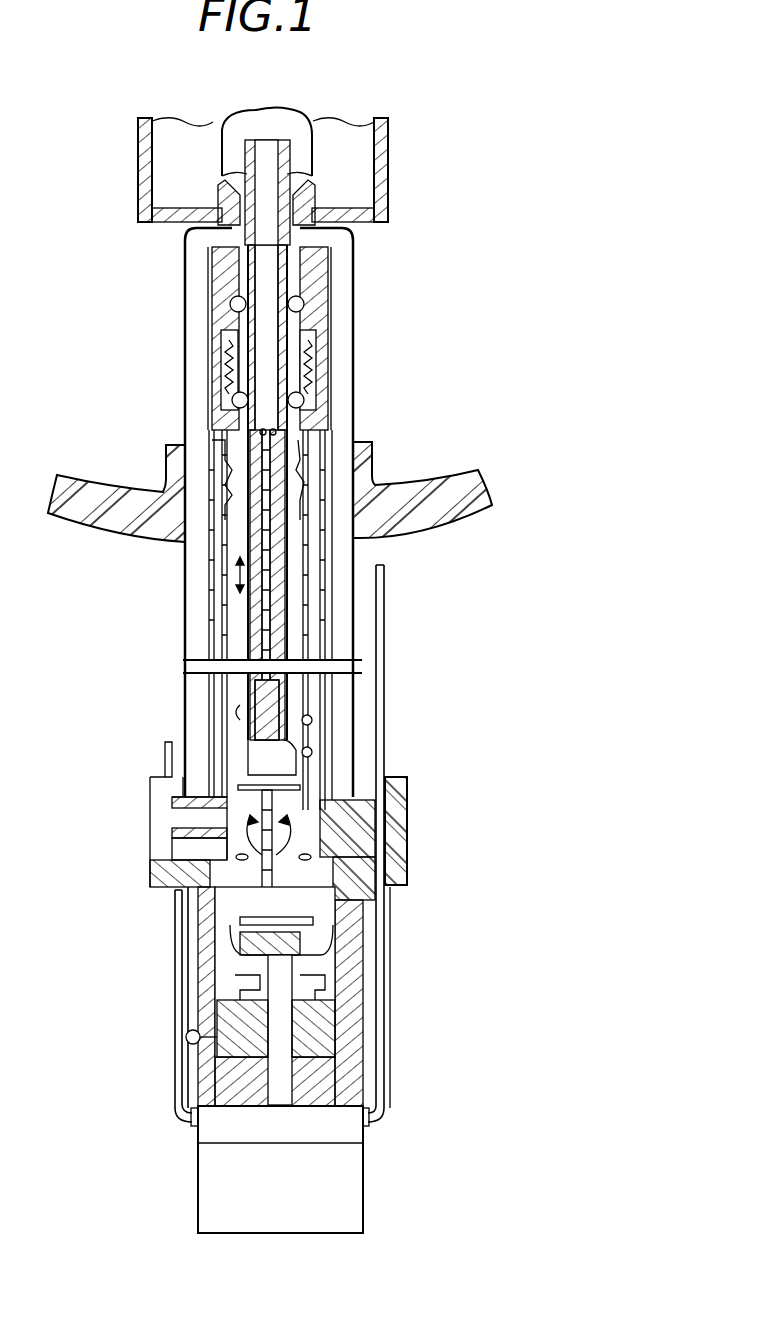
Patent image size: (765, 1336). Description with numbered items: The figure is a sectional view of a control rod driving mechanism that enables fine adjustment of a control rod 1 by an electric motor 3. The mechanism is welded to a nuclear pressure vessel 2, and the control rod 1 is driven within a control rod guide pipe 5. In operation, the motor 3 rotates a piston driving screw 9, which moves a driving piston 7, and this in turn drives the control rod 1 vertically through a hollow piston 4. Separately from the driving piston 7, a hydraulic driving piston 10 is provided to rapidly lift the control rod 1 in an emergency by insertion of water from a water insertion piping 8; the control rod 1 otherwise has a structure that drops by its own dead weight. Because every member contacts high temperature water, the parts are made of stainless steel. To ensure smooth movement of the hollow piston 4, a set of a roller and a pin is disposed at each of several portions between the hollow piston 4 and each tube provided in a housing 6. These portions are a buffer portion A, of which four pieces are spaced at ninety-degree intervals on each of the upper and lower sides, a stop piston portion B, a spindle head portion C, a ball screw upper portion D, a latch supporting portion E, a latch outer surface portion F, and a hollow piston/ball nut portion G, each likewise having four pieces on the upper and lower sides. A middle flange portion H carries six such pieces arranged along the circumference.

The control rod 1 is at (316, 150).
The nuclear pressure vessel 2 is at (452, 520).
The electric motor 3 is at (355, 1180).
The hollow piston 4 is at (185, 255).
The control rod guide pipe 5 is at (388, 205).
The housing 6 is at (355, 252).
The driving piston 7 is at (293, 787).
The water insertion piping 8 is at (233, 727).
The piston driving screw 9 is at (275, 630).
The hydraulic driving piston 10 is at (300, 685).
The buffer portion A is at (331, 393).
The stop piston portion B is at (220, 437).
The spindle head portion C is at (277, 433).
The ball screw upper portion D is at (305, 492).
The latch supporting portion E is at (238, 712).
The latch outer surface portion F is at (250, 738).
The hollow piston/ball nut portion G is at (312, 720).
The middle flange portion H is at (365, 887).